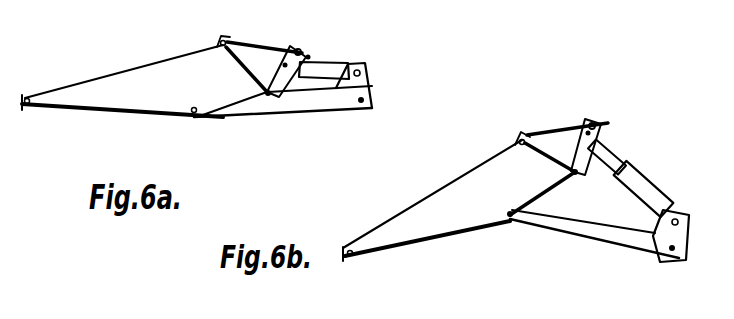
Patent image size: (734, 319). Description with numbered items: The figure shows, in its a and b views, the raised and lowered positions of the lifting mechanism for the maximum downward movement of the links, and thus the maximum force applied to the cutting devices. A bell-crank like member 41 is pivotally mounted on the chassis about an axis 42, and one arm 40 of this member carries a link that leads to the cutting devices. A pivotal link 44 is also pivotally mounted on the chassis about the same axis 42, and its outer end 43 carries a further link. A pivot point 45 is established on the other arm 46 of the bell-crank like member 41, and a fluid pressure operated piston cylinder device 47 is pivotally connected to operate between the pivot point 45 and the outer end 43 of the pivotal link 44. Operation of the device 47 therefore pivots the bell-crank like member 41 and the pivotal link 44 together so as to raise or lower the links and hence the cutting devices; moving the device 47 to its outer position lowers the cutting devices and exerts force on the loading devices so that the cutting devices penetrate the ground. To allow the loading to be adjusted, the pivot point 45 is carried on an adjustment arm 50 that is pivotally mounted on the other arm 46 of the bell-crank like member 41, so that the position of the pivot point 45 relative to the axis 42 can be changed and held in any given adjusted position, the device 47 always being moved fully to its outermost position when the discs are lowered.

In FIG. 6A, the arm of bell-crank like member 40 is at (85, 97).
In FIG. 6B, the arm of bell-crank like member 40 is at (400, 233).
In FIG. 6A, the bell-crank like member 41 is at (135, 74).
In FIG. 6B, the bell-crank like member 41 is at (469, 184).
In FIG. 6A, the axis 42 is at (193, 113).
In FIG. 6B, the axis 42 is at (510, 219).
In FIG. 6A, the outer end of pivotal link 43 is at (360, 104).
In FIG. 6B, the outer end of pivotal link 43 is at (671, 251).
In FIG. 6A, the pivotal link 44 is at (297, 103).
In FIG. 6B, the pivotal link 44 is at (567, 225).
In FIG. 6A, the pivot point 45 is at (285, 65).
In FIG. 6B, the pivot point 45 is at (597, 134).
In FIG. 6A, the other arm of bell-crank like member 46 is at (224, 64).
In FIG. 6B, the other arm of bell-crank like member 46 is at (525, 153).
In FIG. 6A, the fluid pressure operated piston cylinder device 47 is at (325, 66).
In FIG. 6B, the fluid pressure operated piston cylinder device 47 is at (652, 197).
In FIG. 6A, the adjustment arm 50 is at (300, 48).
In FIG. 6B, the adjustment arm 50 is at (592, 121).